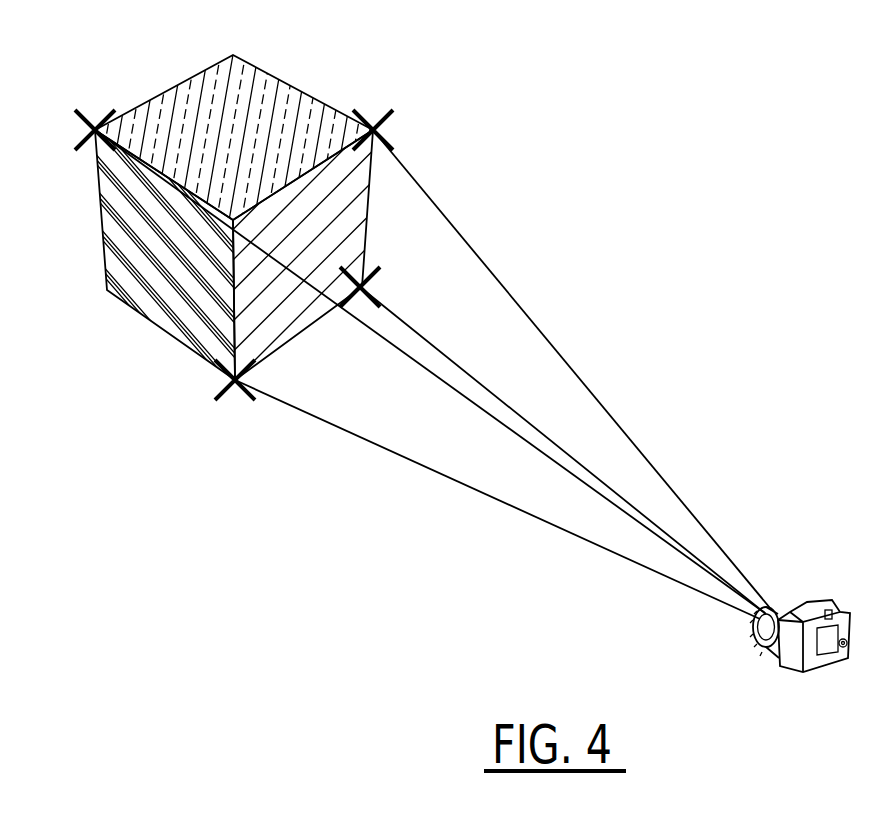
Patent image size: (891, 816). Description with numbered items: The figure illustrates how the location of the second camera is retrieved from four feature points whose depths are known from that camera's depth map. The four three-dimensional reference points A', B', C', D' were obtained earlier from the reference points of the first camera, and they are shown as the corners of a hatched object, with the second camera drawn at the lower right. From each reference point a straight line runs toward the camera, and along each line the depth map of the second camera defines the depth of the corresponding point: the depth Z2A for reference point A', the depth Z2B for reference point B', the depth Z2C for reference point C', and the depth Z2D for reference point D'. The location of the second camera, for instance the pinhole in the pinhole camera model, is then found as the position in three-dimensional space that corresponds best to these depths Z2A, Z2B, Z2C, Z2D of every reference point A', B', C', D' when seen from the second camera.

The 3-D reference point A' is at (77, 115).
The 3-D reference point B' is at (235, 405).
The 3-D reference point C' is at (380, 286).
The 3-D reference point D' is at (392, 113).
The depth of reference point A' from the second camera Z2A is at (430, 371).
The depth of reference point B' from the second camera Z2B is at (497, 499).
The depth of reference point C' from the second camera Z2C is at (563, 450).
The depth of reference point D' from the second camera Z2D is at (571, 369).